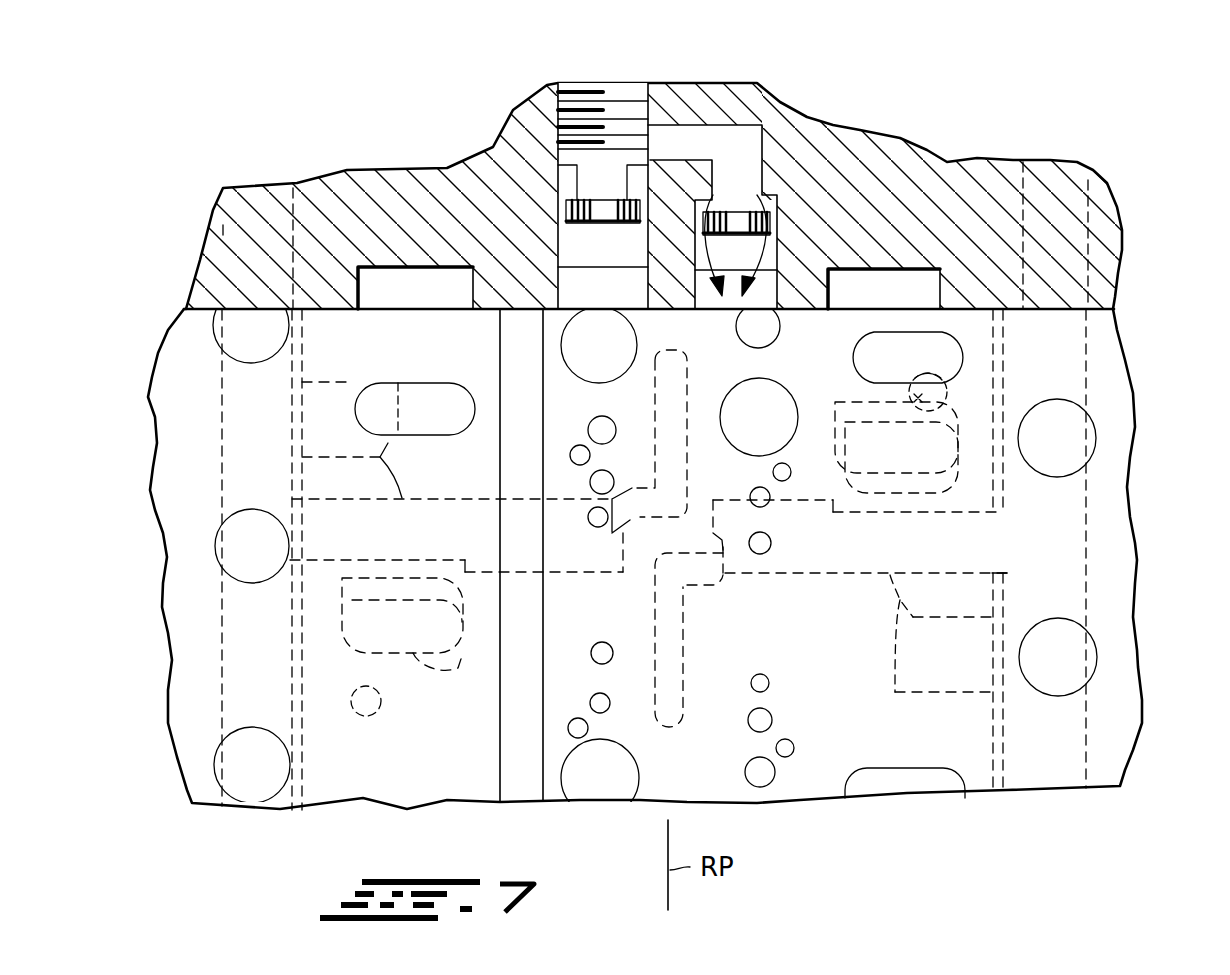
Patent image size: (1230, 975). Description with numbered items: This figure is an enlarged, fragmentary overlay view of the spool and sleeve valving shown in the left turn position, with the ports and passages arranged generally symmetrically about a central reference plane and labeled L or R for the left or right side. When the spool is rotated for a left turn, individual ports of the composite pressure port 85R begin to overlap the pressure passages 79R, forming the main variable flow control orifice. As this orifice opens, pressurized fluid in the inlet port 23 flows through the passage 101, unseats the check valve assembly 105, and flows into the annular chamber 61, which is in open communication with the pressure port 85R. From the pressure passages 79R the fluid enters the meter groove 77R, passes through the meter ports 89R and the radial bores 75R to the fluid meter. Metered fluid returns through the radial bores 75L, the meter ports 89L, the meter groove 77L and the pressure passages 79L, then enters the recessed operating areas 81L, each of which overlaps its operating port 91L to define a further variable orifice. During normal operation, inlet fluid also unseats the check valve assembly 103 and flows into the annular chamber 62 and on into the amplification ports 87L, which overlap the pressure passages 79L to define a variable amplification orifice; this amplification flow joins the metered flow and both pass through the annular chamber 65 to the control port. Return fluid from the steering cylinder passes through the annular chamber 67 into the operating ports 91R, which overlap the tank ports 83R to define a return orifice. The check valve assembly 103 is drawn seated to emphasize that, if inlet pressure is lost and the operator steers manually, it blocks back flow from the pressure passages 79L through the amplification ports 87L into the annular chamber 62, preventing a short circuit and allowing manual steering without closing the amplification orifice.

The inlet port 23 is at (617, 103).
The passage 101 is at (685, 145).
The check valve assembly 103 is at (598, 188).
The check valve assembly 105 is at (730, 196).
The annular chamber 61 is at (767, 283).
The annular chamber 62 is at (582, 279).
The annular chamber 65 is at (430, 268).
The annular chamber 67 is at (897, 268).
The radial bores 75L is at (250, 252).
The radial bores 75R is at (1055, 226).
The meter groove 77L is at (242, 638).
The meter groove 77R is at (1050, 373).
The pressure passages 79L is at (426, 524).
The pressure passages 79R is at (862, 540).
The recessed operating areas 81L is at (326, 421).
The tank ports 83R is at (905, 402).
The composite pressure port 85R is at (800, 448).
The amplification ports 87L is at (572, 495).
The meter ports 89L is at (240, 513).
The meter ports 89R is at (1058, 475).
The operating ports 91L is at (424, 396).
The operating ports 91R is at (942, 347).